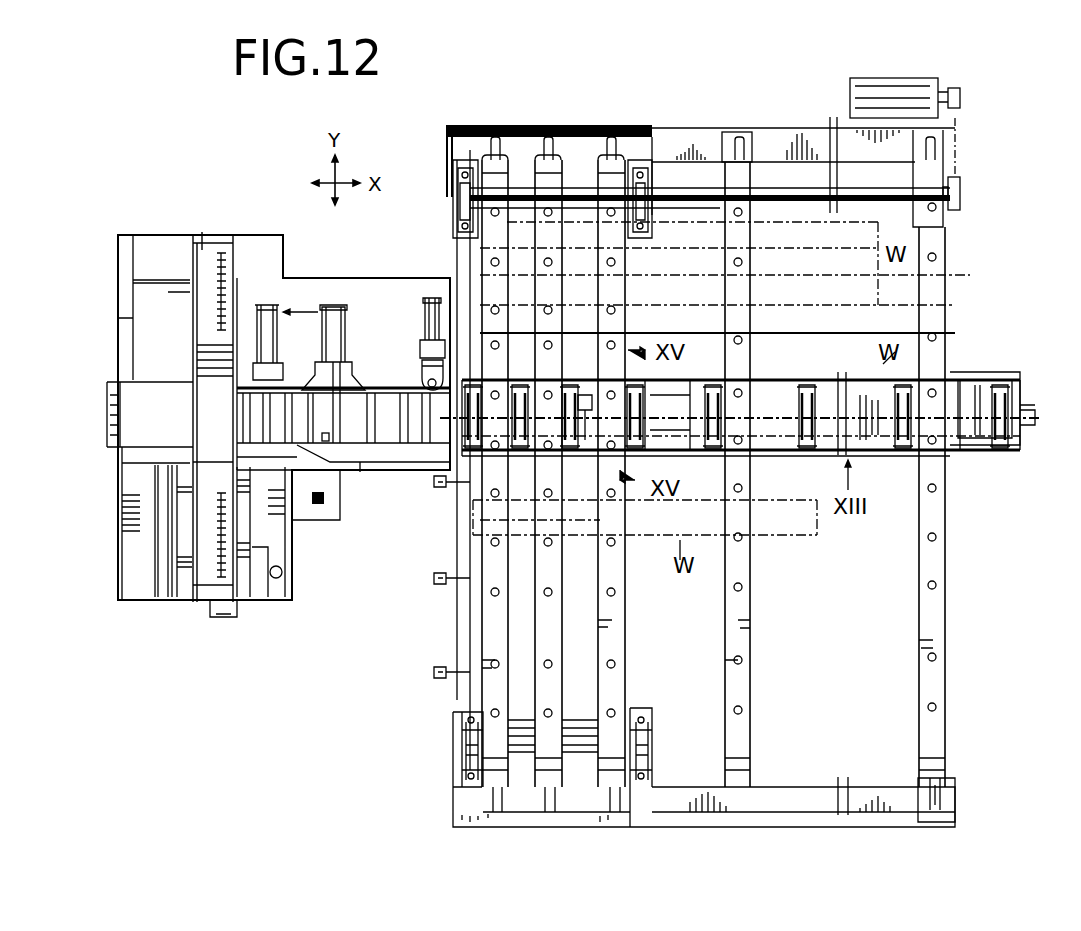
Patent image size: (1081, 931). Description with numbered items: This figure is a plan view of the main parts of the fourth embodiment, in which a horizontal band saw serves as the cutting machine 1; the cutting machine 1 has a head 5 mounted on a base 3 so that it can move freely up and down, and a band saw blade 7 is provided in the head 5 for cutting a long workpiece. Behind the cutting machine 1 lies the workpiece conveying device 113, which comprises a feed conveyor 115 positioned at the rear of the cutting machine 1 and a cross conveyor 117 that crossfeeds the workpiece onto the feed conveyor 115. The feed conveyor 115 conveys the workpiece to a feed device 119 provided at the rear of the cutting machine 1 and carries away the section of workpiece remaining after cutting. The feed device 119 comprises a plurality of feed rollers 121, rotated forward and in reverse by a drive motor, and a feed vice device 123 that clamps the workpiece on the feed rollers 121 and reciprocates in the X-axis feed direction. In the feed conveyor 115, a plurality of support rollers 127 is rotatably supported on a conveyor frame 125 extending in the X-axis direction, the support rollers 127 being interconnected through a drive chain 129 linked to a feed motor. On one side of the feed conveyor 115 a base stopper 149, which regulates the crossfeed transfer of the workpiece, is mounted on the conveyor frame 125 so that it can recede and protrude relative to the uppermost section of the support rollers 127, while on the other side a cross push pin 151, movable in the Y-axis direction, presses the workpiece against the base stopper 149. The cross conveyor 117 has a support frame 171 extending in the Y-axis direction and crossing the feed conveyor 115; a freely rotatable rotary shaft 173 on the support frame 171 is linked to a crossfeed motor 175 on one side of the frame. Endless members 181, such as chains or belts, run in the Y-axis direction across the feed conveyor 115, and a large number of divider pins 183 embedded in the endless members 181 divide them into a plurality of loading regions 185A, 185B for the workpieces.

The cutting machine 1 is at (239, 236).
The base 3 is at (285, 600).
The head 5 is at (210, 240).
The band saw blade 7 is at (202, 349).
The workpiece conveying device 113 is at (544, 110).
The feed conveyor 115 is at (986, 372).
The cross conveyor 117 is at (695, 112).
The feed device 119 is at (359, 358).
The feed rollers 121 is at (374, 390).
The feed vice device 123 is at (320, 378).
The conveyor frame 125 is at (866, 444).
The support rollers 127 is at (542, 438).
The drive chain 129 is at (832, 389).
The base stopper 149 is at (516, 468).
The cross push pin 151 is at (644, 370).
The support frame 171 is at (442, 813).
The rotary shaft 173 is at (782, 202).
The crossfeed motor 175 is at (879, 91).
The endless member 181 is at (622, 640).
The divider pins 183 is at (609, 151).
The loading region 185A is at (467, 244).
The loading region 185B is at (469, 280).